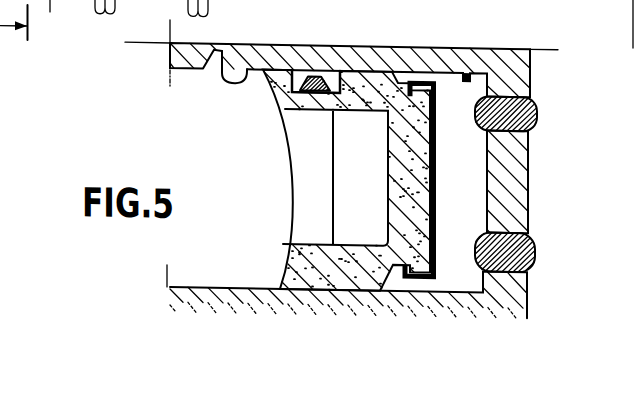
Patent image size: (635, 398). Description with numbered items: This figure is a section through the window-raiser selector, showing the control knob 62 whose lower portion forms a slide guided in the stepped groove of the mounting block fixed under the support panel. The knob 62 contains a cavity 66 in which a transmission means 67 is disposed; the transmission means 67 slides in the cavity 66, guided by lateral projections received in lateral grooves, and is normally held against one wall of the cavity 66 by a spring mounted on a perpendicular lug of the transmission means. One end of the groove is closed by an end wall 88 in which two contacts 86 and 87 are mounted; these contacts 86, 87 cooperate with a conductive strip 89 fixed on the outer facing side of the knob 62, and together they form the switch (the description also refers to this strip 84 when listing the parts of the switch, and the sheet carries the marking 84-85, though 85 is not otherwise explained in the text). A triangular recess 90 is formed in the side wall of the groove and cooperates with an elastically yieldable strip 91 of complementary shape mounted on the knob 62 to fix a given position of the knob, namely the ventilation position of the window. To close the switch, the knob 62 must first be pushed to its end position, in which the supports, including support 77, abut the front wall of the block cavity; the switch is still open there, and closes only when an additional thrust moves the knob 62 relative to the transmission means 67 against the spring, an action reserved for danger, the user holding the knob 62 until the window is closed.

The control knob 62 is at (369, 62).
The cavity 66 is at (381, 164).
The transmission means 67 is at (305, 210).
The support 77 is at (602, 0).
The strip 84 is at (562, 0).
The section line 84- 85 is at (51, 27).
The contact 86 is at (538, 104).
The contact 87 is at (530, 247).
The end wall 88 is at (510, 184).
The conductive strip 89 is at (430, 212).
The triangular recess 90 is at (250, 66).
The elastically yieldable strip 91 is at (315, 69).